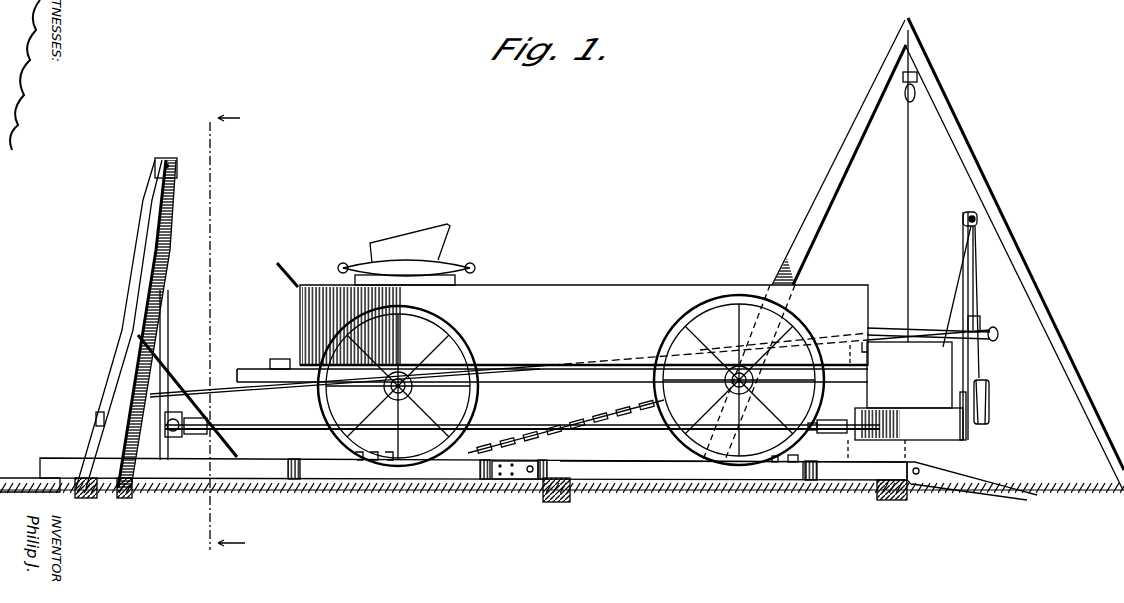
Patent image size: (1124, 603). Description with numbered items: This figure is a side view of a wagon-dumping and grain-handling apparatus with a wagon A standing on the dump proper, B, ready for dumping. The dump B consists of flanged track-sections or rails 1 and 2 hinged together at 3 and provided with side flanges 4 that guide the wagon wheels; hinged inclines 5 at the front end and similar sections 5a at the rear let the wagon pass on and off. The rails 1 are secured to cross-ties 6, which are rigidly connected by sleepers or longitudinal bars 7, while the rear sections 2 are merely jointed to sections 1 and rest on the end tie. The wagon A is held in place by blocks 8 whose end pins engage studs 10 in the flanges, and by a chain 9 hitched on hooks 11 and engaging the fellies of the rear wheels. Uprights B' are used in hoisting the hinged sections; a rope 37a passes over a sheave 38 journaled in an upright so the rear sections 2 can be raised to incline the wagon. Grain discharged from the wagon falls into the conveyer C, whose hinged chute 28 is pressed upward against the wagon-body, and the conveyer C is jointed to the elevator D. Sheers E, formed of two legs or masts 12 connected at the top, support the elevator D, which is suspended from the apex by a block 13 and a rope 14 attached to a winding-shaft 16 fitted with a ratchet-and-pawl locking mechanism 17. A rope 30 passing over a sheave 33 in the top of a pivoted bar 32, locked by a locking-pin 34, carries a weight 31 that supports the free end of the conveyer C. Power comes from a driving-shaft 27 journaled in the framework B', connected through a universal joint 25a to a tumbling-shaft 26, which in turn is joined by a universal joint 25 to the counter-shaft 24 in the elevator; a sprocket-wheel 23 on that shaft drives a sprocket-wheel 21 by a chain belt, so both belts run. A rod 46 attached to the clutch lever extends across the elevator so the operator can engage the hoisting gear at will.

The track-sections or rails 1 is at (732, 469).
The rear track-sections or rails 2 is at (483, 471).
The hinge 3 is at (529, 472).
The side flanges 4 is at (96, 418).
The hinged inclines 5 is at (980, 490).
The rear sections 5a is at (32, 494).
The cross-ties 6 is at (882, 520).
The sleepers or longitudinal bars 7 is at (92, 498).
The blocks 8 is at (798, 460).
The chain 9 is at (575, 425).
The studs or pins 10 is at (805, 465).
The hooks 11 is at (380, 460).
The legs or masts 12 is at (822, 196).
The block 13 is at (913, 108).
The rope 14 is at (907, 203).
The winding-shaft 16 is at (915, 328).
The locking mechanism 17 is at (980, 323).
The sprocket-wheel 21 is at (990, 397).
The sprocket-wheel 23 is at (970, 433).
The counter-shaft 24 is at (856, 441).
The universal joint 25 is at (826, 421).
The universal joint 25a is at (200, 418).
The tumbling rod or shaft 26 is at (505, 419).
The driving-shaft 27 is at (178, 410).
The chute 28 is at (848, 355).
The rope 30 is at (968, 258).
The weight 31 is at (990, 413).
The vertical post or bar 32 is at (974, 286).
The sheave 33 is at (963, 217).
The locking-pin 34 is at (981, 360).
The rope 37a is at (174, 212).
The sheave 38 is at (162, 170).
The rod 46 is at (490, 366).
The wagon A is at (572, 294).
The dump proper B is at (473, 459).
The uprights B' is at (178, 364).
The conveyer C is at (907, 375).
The elevator D is at (909, 424).
The sheers E is at (913, 254).